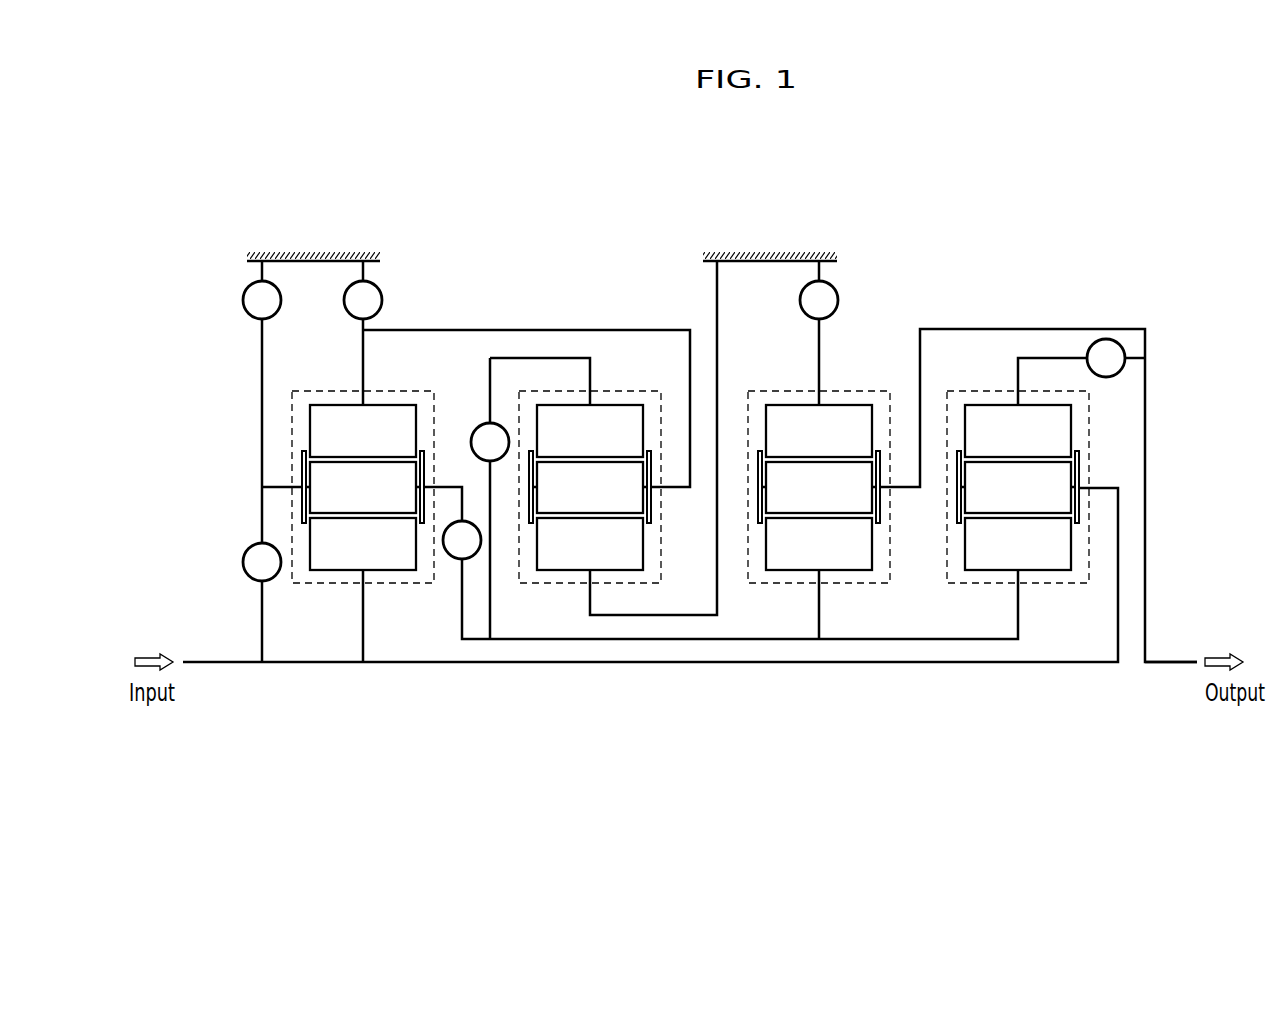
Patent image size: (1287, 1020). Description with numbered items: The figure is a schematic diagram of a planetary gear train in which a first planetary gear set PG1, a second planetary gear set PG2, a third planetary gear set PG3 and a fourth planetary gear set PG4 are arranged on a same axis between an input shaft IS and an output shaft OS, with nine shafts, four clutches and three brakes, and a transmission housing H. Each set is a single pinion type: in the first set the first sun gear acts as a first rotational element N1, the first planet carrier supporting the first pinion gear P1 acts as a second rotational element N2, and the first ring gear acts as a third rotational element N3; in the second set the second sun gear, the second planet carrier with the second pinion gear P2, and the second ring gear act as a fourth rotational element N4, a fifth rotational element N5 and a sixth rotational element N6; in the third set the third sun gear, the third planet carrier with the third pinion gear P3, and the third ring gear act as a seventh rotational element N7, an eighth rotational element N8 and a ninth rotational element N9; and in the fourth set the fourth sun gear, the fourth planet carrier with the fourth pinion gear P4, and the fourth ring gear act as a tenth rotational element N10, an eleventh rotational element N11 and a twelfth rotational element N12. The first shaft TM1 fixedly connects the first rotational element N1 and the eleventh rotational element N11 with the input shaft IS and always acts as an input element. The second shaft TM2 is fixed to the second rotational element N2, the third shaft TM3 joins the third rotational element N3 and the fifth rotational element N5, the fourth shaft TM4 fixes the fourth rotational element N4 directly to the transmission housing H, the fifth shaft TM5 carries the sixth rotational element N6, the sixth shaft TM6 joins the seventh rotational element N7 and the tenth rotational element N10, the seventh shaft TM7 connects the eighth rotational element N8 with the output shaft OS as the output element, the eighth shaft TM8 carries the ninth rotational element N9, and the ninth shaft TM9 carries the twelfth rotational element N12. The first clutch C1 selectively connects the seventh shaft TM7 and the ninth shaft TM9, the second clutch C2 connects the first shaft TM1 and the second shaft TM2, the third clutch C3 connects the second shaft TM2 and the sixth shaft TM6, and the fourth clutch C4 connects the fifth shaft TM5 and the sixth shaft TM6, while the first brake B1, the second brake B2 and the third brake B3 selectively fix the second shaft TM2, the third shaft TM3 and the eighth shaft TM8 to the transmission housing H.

The transmission housing H is at (312, 256).
The input shaft IS is at (208, 664).
The output shaft OS is at (1165, 664).
The first planetary gear set PG1 is at (320, 585).
The second planetary gear set PG2 is at (548, 585).
The third planetary gear set PG3 is at (790, 585).
The fourth planetary gear set PG4 is at (1057, 585).
The first rotational element N1 is at (363, 544).
The second rotational element N2 is at (425, 461).
The third rotational element N3 is at (363, 431).
The fourth rotational element N4 is at (590, 544).
The fifth rotational element N5 is at (652, 502).
The sixth rotational element N6 is at (590, 431).
The seventh rotational element N7 is at (819, 544).
The eighth rotational element N8 is at (881, 502).
The ninth rotational element N9 is at (819, 431).
The tenth rotational element N10 is at (1018, 544).
The eleventh rotational element N11 is at (1080, 462).
The twelfth rotational element N12 is at (1018, 431).
The first pinion gear P1 is at (363, 487).
The second pinion gear P2 is at (590, 487).
The third pinion gear P3 is at (819, 487).
The fourth pinion gear P4 is at (1018, 487).
The first shaft TM1 is at (422, 664).
The second shaft TM2 is at (262, 452).
The third shaft TM3 is at (463, 328).
The fourth shaft TM4 is at (716, 292).
The fifth shaft TM5 is at (550, 357).
The sixth shaft TM6 is at (697, 641).
The seventh shaft TM7 is at (1000, 328).
The eighth shaft TM8 is at (820, 335).
The ninth shaft TM9 is at (1057, 357).
The first brake B1 is at (262, 290).
The second brake B2 is at (363, 290).
The third brake B3 is at (819, 290).
The first clutch C1 is at (1116, 358).
The second clutch C2 is at (262, 602).
The third clutch C3 is at (452, 523).
The fourth clutch C4 is at (490, 409).